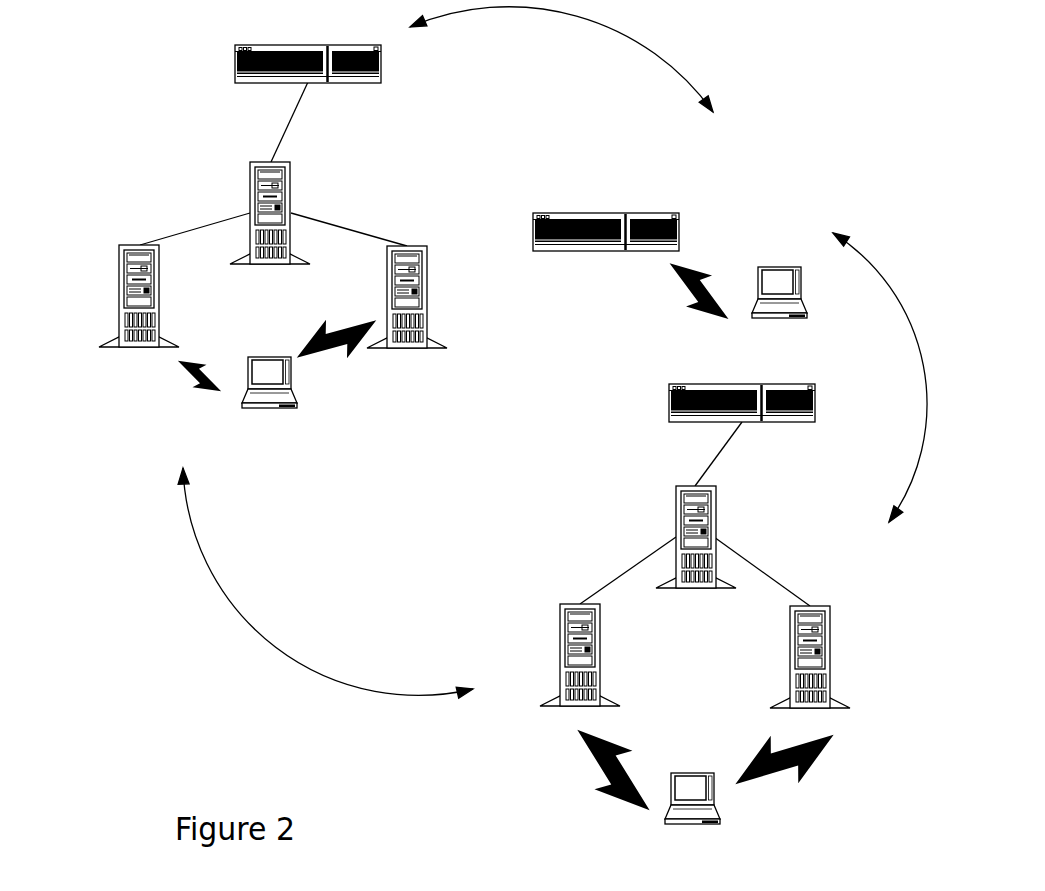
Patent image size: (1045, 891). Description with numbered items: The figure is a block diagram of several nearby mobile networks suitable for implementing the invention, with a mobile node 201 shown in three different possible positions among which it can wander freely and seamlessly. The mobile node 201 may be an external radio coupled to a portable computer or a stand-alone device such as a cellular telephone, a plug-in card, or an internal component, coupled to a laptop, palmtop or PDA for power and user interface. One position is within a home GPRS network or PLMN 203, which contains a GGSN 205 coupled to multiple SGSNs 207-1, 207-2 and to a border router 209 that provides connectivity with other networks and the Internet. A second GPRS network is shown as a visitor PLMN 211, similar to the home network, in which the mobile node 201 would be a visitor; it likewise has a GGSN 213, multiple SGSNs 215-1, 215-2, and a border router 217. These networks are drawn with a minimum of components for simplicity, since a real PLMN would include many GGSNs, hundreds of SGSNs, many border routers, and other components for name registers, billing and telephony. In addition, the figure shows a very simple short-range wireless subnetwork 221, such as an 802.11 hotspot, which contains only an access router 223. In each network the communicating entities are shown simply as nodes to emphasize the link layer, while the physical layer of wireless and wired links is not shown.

The mobile node 201 is at (290, 408).
The home GPRS network or PLMN 203 is at (850, 581).
The GGSN 205 is at (714, 508).
The SGSN 207-1 is at (828, 658).
The SGSN 207-2 is at (560, 652).
The border router 209 is at (816, 403).
The visitor PLMN 211 is at (185, 161).
The GGSN 213 is at (291, 187).
The SGSN 215-1 is at (426, 298).
The SGSN 215-2 is at (119, 297).
The border router 217 is at (382, 63).
The short-range wireless subnetwork 221 is at (766, 163).
The access router 223 is at (600, 250).